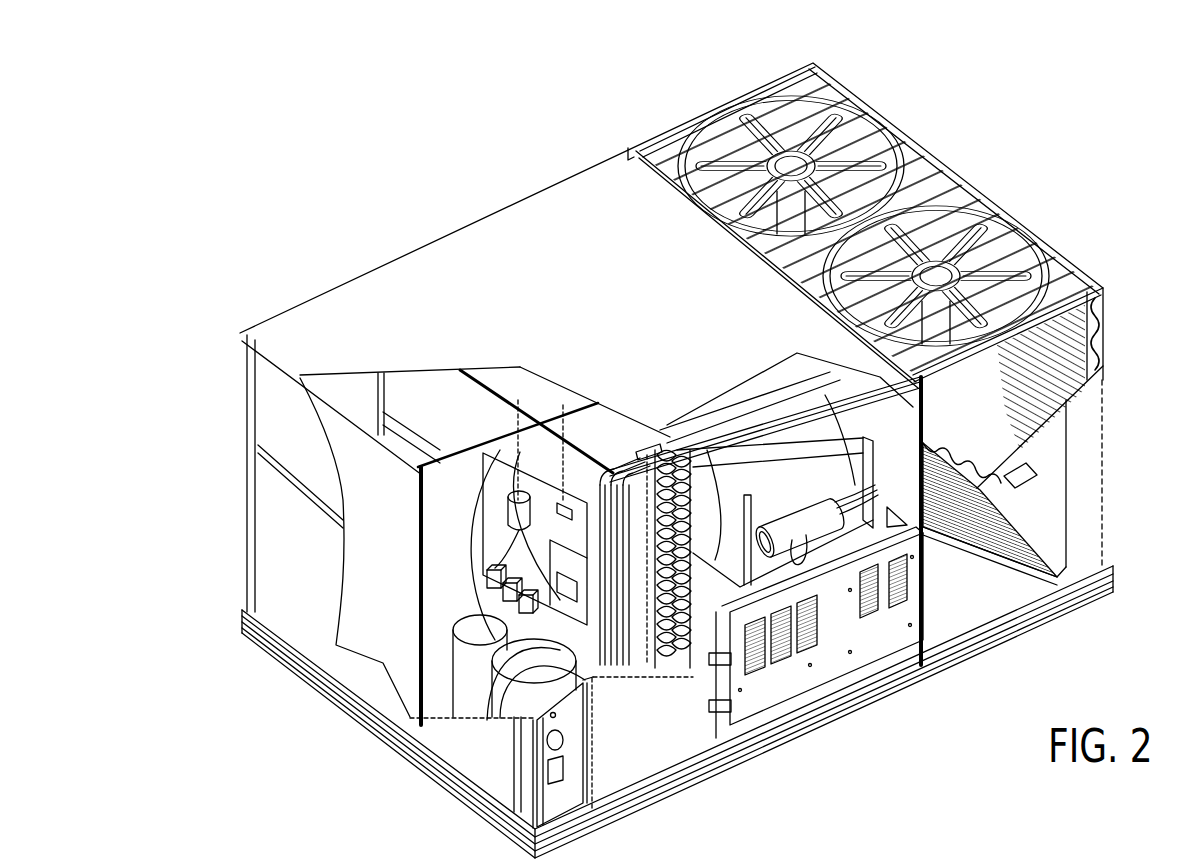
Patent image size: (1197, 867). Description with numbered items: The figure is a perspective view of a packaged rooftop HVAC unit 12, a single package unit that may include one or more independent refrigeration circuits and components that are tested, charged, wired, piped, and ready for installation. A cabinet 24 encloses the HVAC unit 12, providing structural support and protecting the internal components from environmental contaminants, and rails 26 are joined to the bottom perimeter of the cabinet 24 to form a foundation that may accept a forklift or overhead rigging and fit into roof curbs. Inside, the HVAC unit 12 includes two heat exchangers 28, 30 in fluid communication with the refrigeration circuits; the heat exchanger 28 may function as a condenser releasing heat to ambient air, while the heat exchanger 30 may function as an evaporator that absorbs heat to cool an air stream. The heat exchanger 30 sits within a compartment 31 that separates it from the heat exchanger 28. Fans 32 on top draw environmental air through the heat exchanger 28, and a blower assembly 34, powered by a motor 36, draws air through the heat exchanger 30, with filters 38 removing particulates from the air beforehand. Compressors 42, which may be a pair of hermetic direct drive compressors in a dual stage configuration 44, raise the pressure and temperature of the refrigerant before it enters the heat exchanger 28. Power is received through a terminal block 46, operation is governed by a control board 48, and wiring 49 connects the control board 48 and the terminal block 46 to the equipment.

The HVAC unit 12 is at (418, 164).
The cabinet 24 is at (285, 583).
The rails 26 is at (305, 677).
The heat exchanger 28 is at (1104, 347).
The heat exchanger 30 is at (665, 585).
The compartment 31 is at (715, 503).
The fans 32 is at (992, 228).
The blower assembly 34 is at (858, 472).
The motor 36 is at (797, 520).
The filters 38 is at (638, 503).
The compressors 42 is at (458, 662).
The dual stage configuration 44 is at (458, 617).
The terminal block 46 is at (535, 557).
The control board 48 is at (570, 570).
The wiring 49 is at (650, 478).